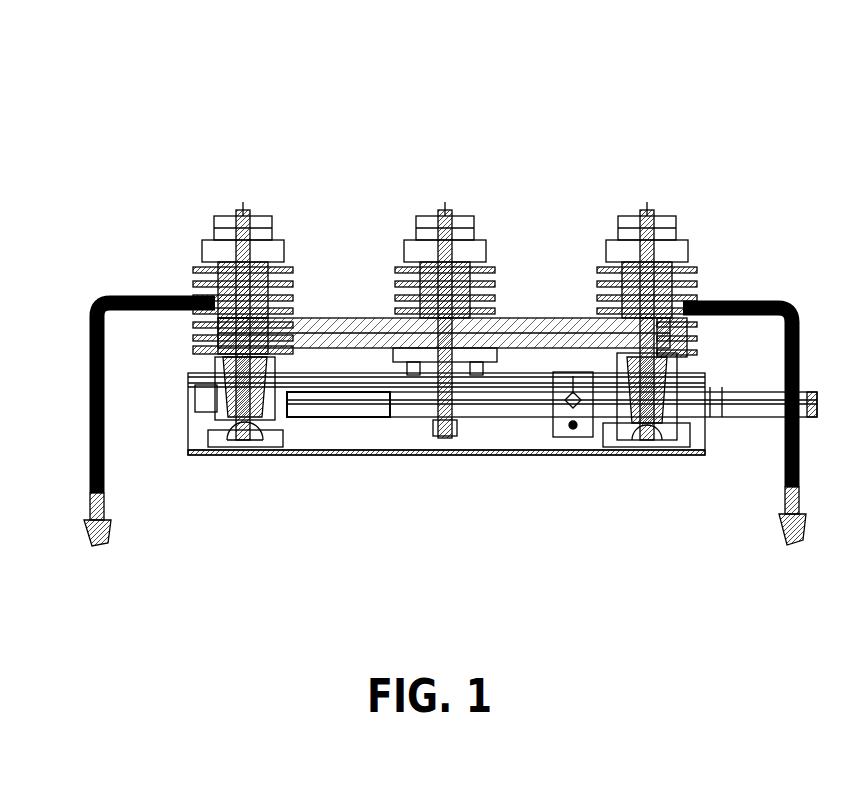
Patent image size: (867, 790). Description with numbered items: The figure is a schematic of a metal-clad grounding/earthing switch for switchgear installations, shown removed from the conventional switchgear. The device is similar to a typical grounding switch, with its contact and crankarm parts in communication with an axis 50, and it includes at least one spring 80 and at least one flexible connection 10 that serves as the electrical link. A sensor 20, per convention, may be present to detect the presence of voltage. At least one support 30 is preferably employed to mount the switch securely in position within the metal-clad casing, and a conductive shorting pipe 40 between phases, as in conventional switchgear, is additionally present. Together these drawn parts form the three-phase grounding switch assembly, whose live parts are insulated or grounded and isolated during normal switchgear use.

The flexible connection 10 is at (150, 297).
The sensor 20 is at (202, 285).
The support 30 is at (344, 378).
The conductive shorting pipe 40 is at (562, 333).
The axis 50 is at (750, 393).
The spring 80 is at (240, 400).